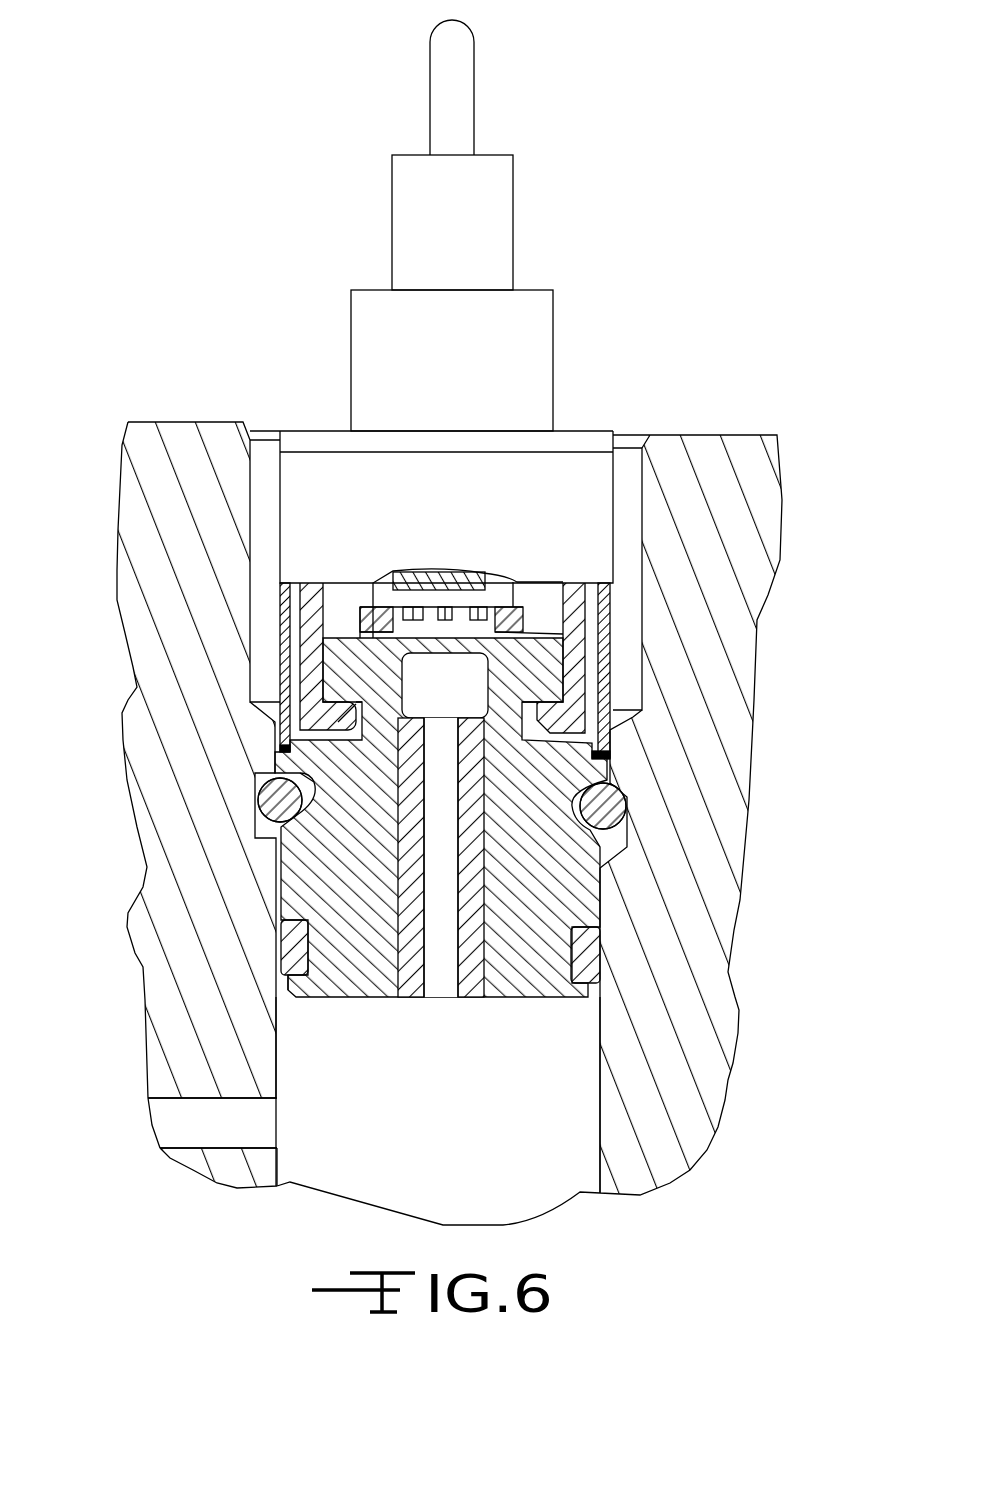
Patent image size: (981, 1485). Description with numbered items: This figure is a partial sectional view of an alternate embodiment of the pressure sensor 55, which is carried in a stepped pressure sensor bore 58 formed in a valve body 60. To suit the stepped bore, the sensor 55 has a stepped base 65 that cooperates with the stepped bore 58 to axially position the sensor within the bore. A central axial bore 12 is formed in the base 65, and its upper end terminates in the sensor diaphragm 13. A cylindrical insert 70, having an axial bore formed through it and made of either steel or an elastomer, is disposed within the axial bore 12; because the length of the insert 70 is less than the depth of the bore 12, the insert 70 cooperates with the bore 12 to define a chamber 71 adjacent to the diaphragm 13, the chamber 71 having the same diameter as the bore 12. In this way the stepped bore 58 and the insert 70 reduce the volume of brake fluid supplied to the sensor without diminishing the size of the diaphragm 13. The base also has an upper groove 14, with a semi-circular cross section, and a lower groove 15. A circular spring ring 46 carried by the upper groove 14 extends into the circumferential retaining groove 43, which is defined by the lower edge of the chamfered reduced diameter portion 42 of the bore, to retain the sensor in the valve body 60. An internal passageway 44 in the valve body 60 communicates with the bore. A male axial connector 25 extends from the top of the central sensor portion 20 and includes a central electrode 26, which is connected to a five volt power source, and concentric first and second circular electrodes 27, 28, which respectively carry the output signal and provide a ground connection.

The central axial bore 12 is at (434, 894).
The diaphragm 13 is at (432, 648).
The upper circumferential groove 14 is at (312, 778).
The lower circumferential groove 15 is at (290, 980).
The central sensor portion 20 is at (414, 515).
The male axial connector 25 is at (413, 215).
The central electrode 26 is at (455, 52).
The first circular electrode 27 is at (436, 240).
The second circular electrode 28 is at (414, 373).
The reduced diameter portion 42 is at (630, 737).
The circumferential retaining groove 43 is at (630, 823).
The internal passageway 44 is at (195, 1123).
The circular spring ring 46 is at (265, 785).
The pressure sensor 55 is at (604, 383).
The stepped pressure sensor bore 58 is at (424, 1138).
The valve body 60 is at (750, 578).
The stepped base 65 is at (527, 985).
The cylindrical insert 70 is at (472, 997).
The chamber 71 is at (414, 715).